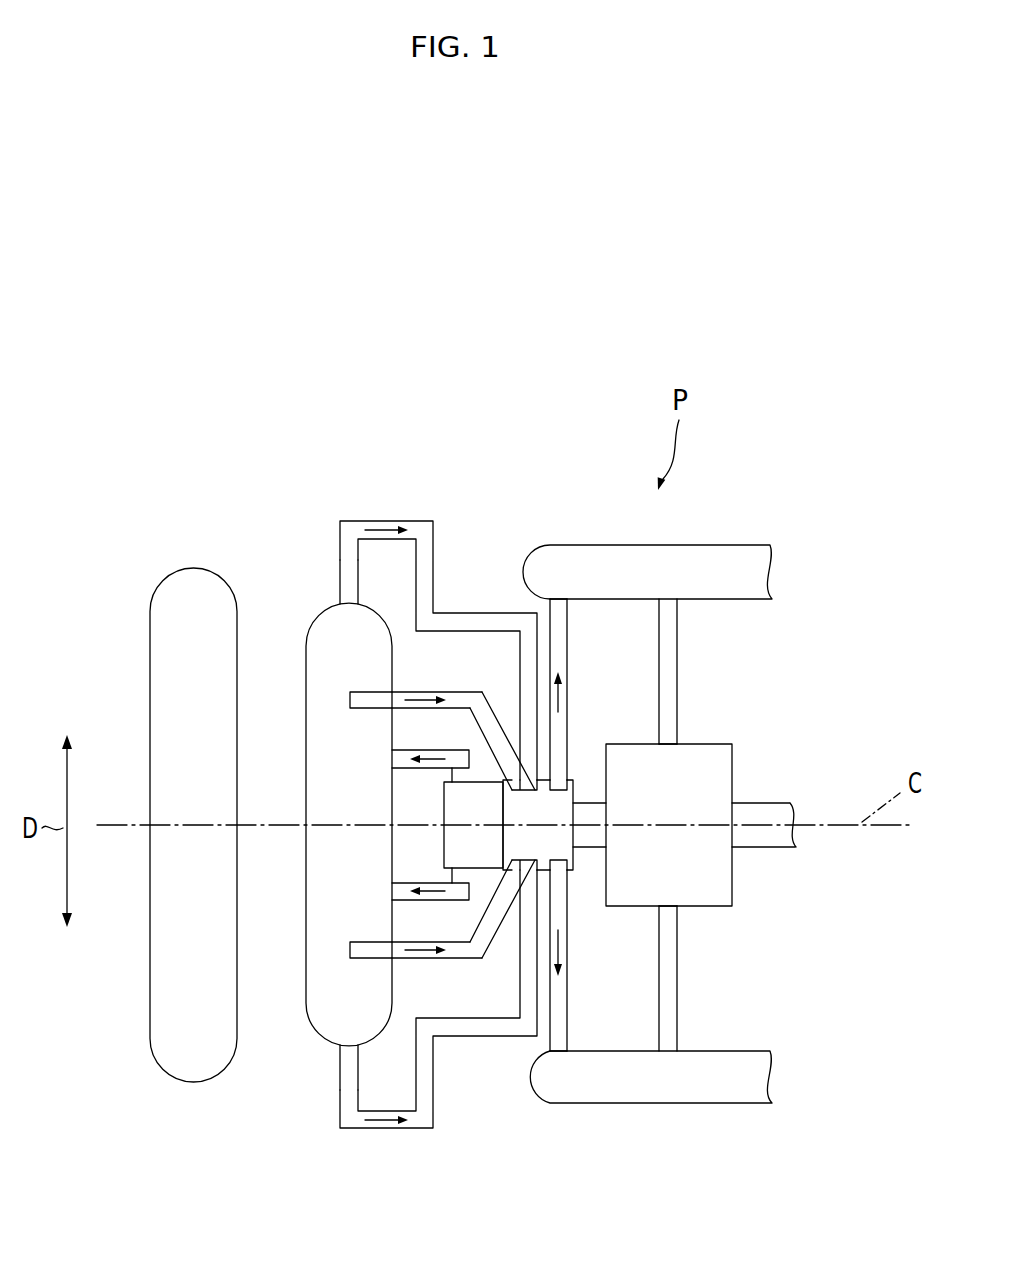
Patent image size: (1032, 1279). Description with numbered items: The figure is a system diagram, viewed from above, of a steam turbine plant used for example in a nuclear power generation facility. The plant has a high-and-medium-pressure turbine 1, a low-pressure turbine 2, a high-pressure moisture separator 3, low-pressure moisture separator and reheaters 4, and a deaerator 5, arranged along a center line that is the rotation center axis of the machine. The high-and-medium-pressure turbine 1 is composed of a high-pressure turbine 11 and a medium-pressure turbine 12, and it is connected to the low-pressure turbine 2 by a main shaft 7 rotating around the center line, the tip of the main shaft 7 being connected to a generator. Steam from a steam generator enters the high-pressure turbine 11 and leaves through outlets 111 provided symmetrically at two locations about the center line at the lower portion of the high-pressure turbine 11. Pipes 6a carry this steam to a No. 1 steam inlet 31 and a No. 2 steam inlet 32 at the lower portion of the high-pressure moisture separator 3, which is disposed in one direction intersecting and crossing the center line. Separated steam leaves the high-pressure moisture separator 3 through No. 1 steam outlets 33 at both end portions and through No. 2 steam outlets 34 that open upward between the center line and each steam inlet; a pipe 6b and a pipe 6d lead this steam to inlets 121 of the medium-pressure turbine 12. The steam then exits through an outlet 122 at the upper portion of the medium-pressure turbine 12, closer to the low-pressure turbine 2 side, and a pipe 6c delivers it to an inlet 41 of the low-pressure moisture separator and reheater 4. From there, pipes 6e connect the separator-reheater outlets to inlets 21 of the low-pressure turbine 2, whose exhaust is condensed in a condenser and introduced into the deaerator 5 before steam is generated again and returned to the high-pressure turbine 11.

The high-and-medium-pressure turbine 1 is at (452, 889).
The low-pressure turbine 2 is at (718, 765).
The high-pressure moisture separator 3 is at (323, 608).
The low-pressure moisture separator and reheater 4 is at (715, 558).
The deaerator 5 is at (193, 567).
The pipe 6a is at (465, 758).
The pipe 6b is at (420, 520).
The pipe 6c is at (562, 655).
The pipe 6d is at (462, 692).
The pipe 6e is at (673, 656).
The main shaft 7 is at (762, 803).
The high-pressure turbine 11 is at (488, 858).
The medium-pressure turbine 12 is at (540, 793).
The inlet 21 is at (676, 740).
The No. 1 steam inlet 31 is at (395, 750).
The No. 2 steam inlet 32 is at (395, 902).
The No. 1 steam outlet 33 is at (350, 605).
The No. 2 steam outlet 34 is at (350, 698).
The inlet 41 is at (567, 600).
The outlet 111 is at (453, 878).
The inlet 121 is at (525, 860).
The outlet 122 is at (578, 872).